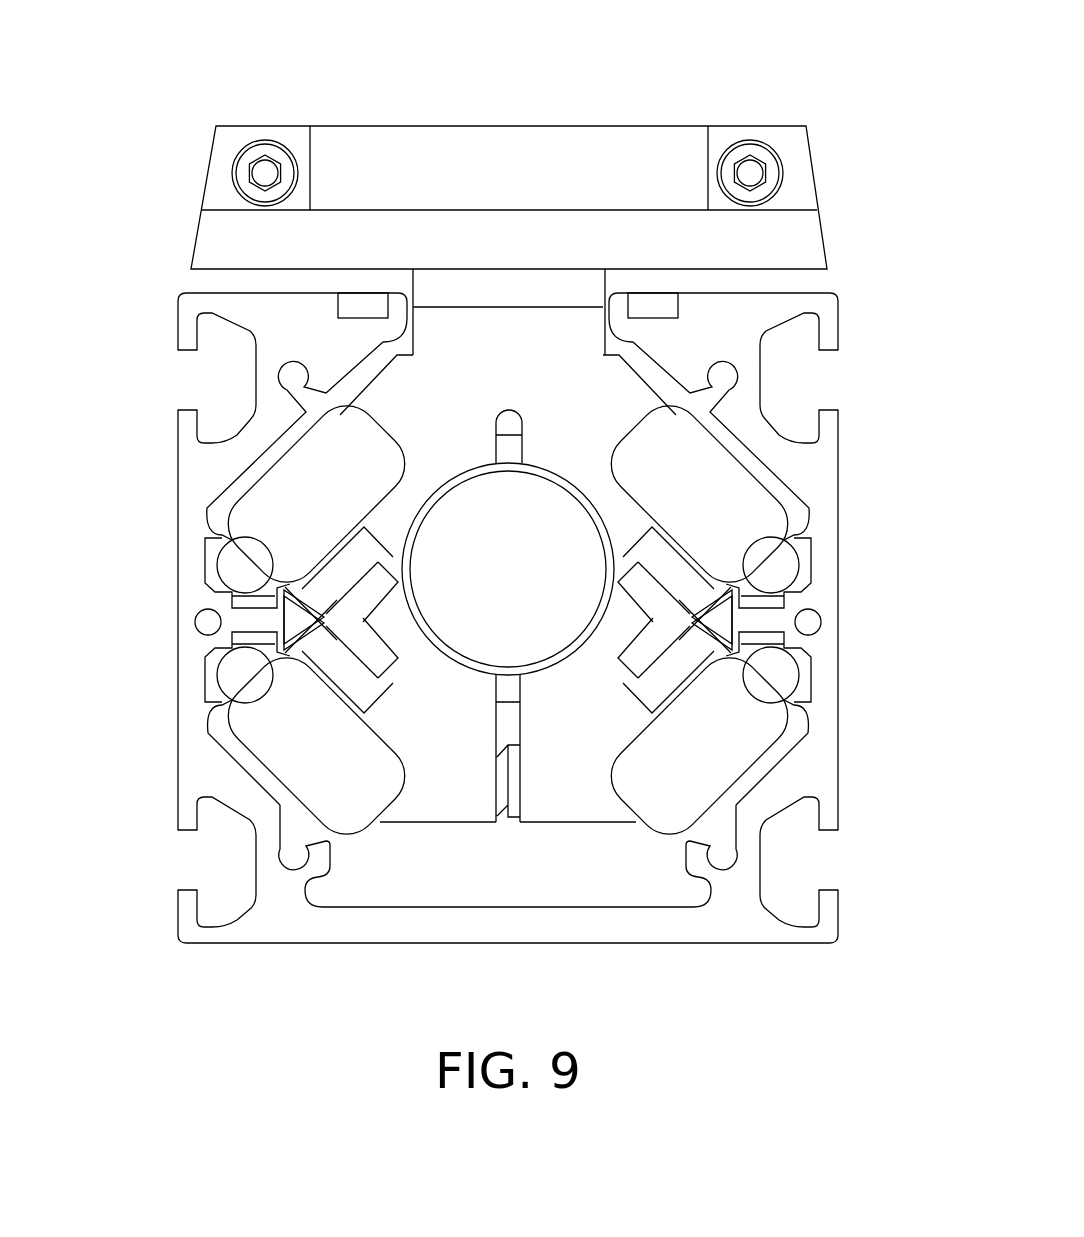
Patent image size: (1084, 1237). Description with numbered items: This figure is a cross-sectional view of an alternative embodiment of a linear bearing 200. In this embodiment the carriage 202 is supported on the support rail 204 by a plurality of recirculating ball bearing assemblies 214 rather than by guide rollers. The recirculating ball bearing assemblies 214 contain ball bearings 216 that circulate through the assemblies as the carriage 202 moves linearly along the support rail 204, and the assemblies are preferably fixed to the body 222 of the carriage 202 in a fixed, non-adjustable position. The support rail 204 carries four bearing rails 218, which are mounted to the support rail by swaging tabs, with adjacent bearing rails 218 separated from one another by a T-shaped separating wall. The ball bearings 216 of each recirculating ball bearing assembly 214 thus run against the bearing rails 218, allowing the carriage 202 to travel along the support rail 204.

The linear bearing 200 is at (848, 125).
The carriage 202 is at (493, 72).
The support rail 204 is at (832, 480).
The recirculating ball bearing assemblies 214 is at (268, 460).
The ball bearings 216 is at (232, 575).
The bearing rails 218 is at (218, 545).
The body 222 is at (430, 880).